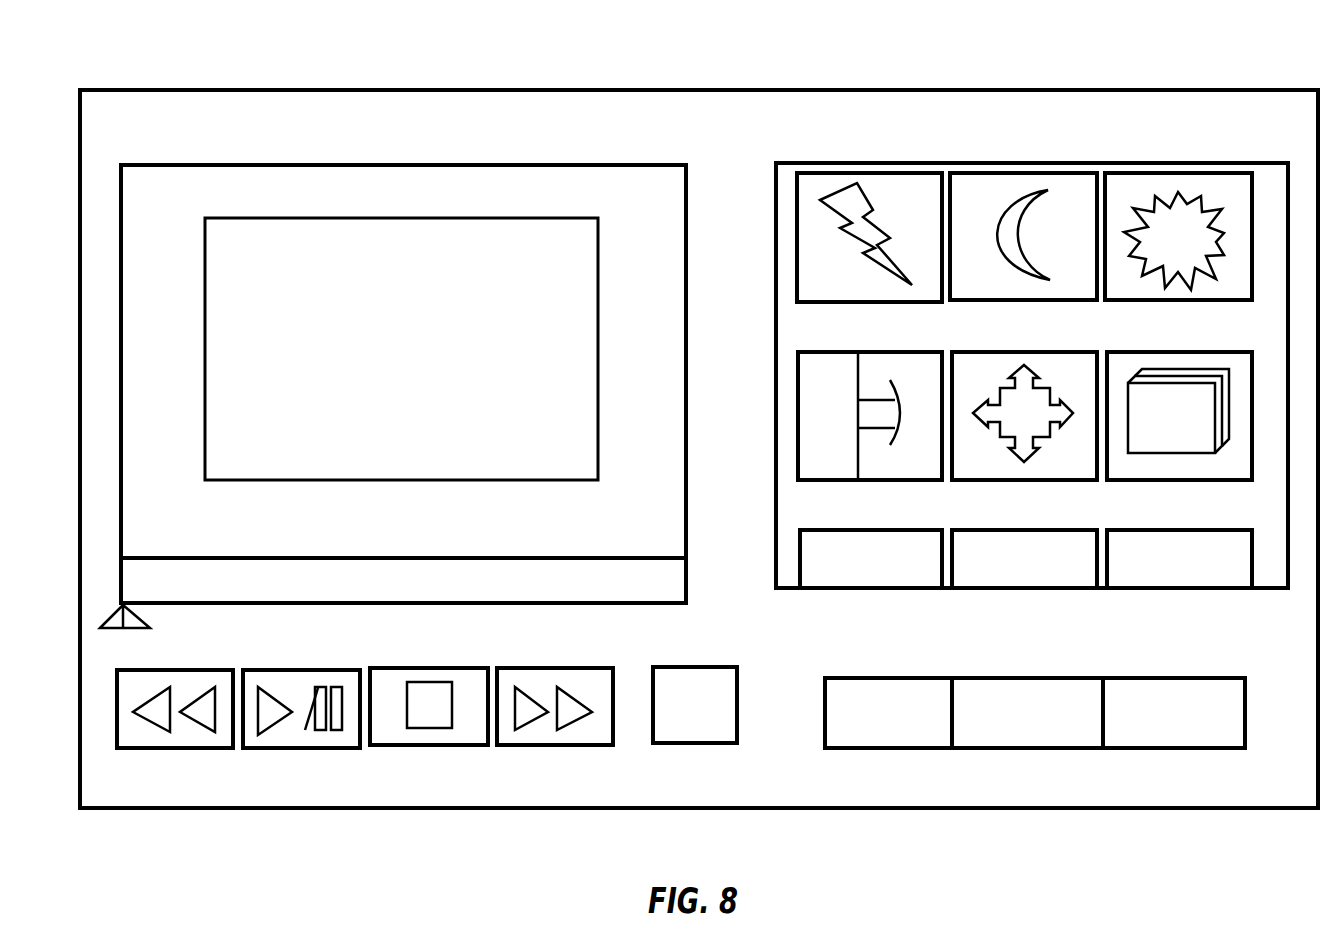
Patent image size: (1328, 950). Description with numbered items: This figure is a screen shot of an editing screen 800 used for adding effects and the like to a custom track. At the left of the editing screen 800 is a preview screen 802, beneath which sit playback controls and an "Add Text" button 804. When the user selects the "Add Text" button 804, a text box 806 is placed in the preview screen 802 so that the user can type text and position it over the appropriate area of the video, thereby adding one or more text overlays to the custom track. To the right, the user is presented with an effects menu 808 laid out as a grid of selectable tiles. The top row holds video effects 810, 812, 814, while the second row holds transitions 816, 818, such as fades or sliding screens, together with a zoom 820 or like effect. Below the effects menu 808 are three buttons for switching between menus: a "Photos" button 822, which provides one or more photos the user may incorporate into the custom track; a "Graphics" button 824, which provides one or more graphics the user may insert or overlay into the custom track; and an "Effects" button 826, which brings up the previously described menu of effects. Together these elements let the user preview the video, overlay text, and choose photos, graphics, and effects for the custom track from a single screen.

The editing screen 800 is at (256, 50).
The preview screen 802 is at (572, 165).
The Add Text button 804 is at (693, 667).
The text box 806 is at (430, 218).
The effects menu 808 is at (822, 163).
The video effect 810 is at (870, 175).
The video effect 812 is at (1022, 173).
The video effect 814 is at (1178, 173).
The transition 816 is at (870, 352).
The transition 818 is at (1022, 352).
The zoom 820 is at (1178, 352).
The Photos button 822 is at (862, 678).
The Graphics tab 824 is at (1010, 678).
The Effects tab 826 is at (1165, 678).